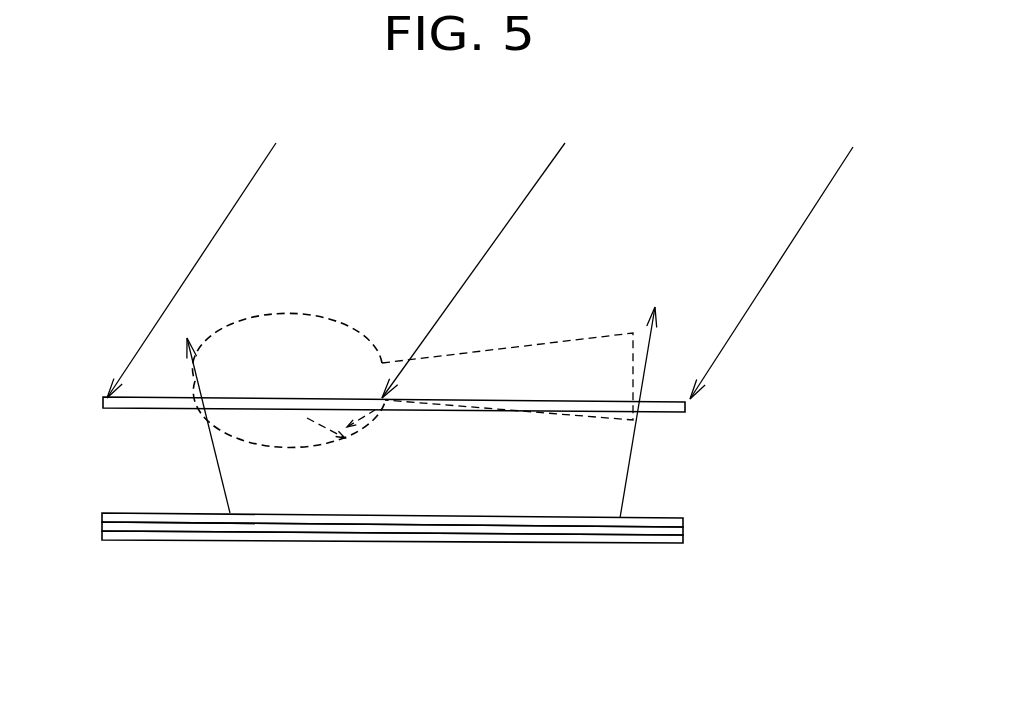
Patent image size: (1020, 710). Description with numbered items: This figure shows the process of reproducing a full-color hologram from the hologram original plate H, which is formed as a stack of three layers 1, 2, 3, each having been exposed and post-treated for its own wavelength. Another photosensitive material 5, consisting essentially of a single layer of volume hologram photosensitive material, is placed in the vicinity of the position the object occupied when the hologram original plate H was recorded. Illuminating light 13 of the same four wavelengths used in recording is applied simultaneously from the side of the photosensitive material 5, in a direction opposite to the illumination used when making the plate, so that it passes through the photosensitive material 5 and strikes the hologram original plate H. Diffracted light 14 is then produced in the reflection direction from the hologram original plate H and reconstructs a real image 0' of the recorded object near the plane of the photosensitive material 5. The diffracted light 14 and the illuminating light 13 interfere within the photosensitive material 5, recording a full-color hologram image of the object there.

The photosensitive material 5 is at (687, 406).
The real image 0' is at (288, 341).
The illuminating light 13 is at (801, 226).
The diffracted light 14 is at (460, 393).
The first layer 1 is at (685, 521).
The second layer 2 is at (685, 531).
The third layer 3 is at (685, 538).
The hologram original plate H is at (783, 485).